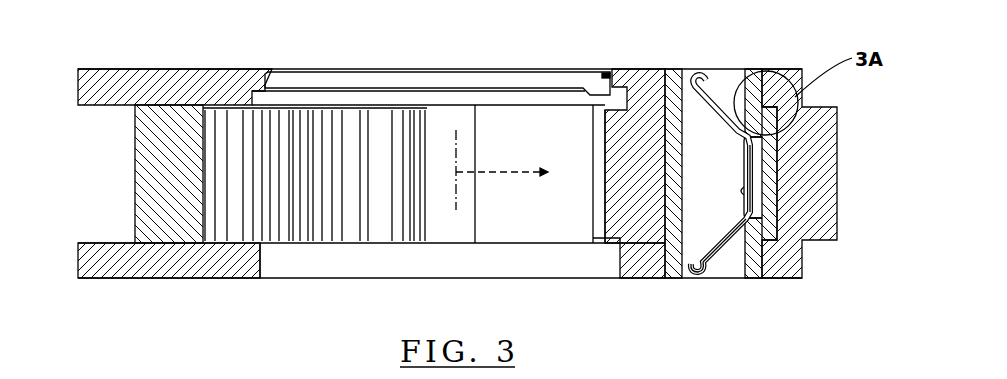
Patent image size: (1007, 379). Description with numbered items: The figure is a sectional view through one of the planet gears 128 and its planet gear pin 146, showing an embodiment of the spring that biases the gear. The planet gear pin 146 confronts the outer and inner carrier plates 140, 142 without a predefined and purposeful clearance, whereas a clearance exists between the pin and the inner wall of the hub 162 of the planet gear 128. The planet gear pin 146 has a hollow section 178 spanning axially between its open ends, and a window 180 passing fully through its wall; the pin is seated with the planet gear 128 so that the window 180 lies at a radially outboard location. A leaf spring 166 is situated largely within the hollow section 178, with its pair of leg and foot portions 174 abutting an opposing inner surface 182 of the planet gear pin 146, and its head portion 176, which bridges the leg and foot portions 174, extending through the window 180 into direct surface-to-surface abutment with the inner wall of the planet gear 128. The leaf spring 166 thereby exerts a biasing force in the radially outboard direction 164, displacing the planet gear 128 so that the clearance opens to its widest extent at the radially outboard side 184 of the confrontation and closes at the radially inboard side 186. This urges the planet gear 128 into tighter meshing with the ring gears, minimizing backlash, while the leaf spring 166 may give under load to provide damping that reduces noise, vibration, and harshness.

The planet gear 128 is at (250, 160).
The outer carrier plate 140 is at (172, 80).
The inner carrier plate 142 is at (162, 262).
The planet gear pin 146 is at (673, 69).
The hub 162 is at (770, 214).
The radially outboard direction 164 is at (498, 170).
The leaf spring 166 is at (720, 236).
The leg and foot portions 174 is at (715, 72).
The head portion 176 is at (742, 177).
The hollow section 178 is at (693, 270).
The window 180 is at (745, 191).
The inner surface 182 is at (755, 152).
The radially outboard side 184 is at (762, 278).
The radially inboard side 186 is at (667, 278).